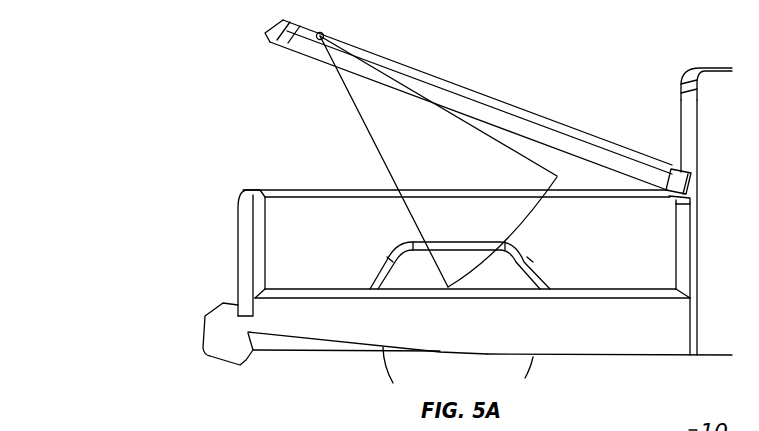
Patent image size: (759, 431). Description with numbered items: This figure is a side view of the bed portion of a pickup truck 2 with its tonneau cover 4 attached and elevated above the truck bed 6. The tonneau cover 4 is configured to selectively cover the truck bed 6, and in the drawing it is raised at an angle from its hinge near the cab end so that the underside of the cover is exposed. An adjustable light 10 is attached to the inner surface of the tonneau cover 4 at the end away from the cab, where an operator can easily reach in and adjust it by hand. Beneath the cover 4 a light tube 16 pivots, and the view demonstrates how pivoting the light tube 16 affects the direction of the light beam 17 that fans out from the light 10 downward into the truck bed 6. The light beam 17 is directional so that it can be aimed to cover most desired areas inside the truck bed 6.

The pickup truck 2 is at (559, 60).
The tonneau cover 4 is at (407, 66).
The truck bed 6 is at (228, 187).
The adjustable light 10 is at (323, 34).
The light tube 16 is at (322, 61).
The light beam 17 is at (400, 147).